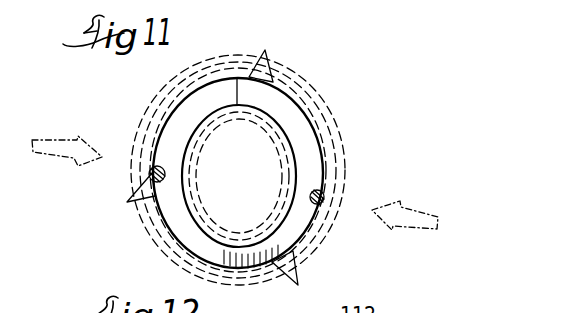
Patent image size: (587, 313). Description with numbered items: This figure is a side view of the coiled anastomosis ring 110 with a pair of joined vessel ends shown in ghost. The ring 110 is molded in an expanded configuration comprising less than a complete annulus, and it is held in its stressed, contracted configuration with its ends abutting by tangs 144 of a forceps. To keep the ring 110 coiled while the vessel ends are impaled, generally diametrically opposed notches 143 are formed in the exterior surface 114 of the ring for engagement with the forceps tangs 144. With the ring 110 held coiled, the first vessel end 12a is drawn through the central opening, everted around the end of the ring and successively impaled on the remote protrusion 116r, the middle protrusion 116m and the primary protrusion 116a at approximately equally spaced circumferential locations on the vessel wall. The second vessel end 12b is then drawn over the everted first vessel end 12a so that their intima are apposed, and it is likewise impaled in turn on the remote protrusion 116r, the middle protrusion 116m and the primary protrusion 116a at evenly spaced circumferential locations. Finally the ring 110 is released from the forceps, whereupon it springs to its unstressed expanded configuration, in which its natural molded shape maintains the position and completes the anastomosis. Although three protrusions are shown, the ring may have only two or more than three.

The ring 110 is at (173, 238).
The first vessel end 12a is at (282, 90).
The second vessel end 12b is at (324, 104).
The notches 143 is at (186, 183).
The primary protrusion 116a is at (258, 60).
The remote protrusion 116r is at (138, 207).
The middle protrusion 116m is at (306, 256).
The tangs 144 is at (150, 176).
The exterior surface 114 is at (222, 269).